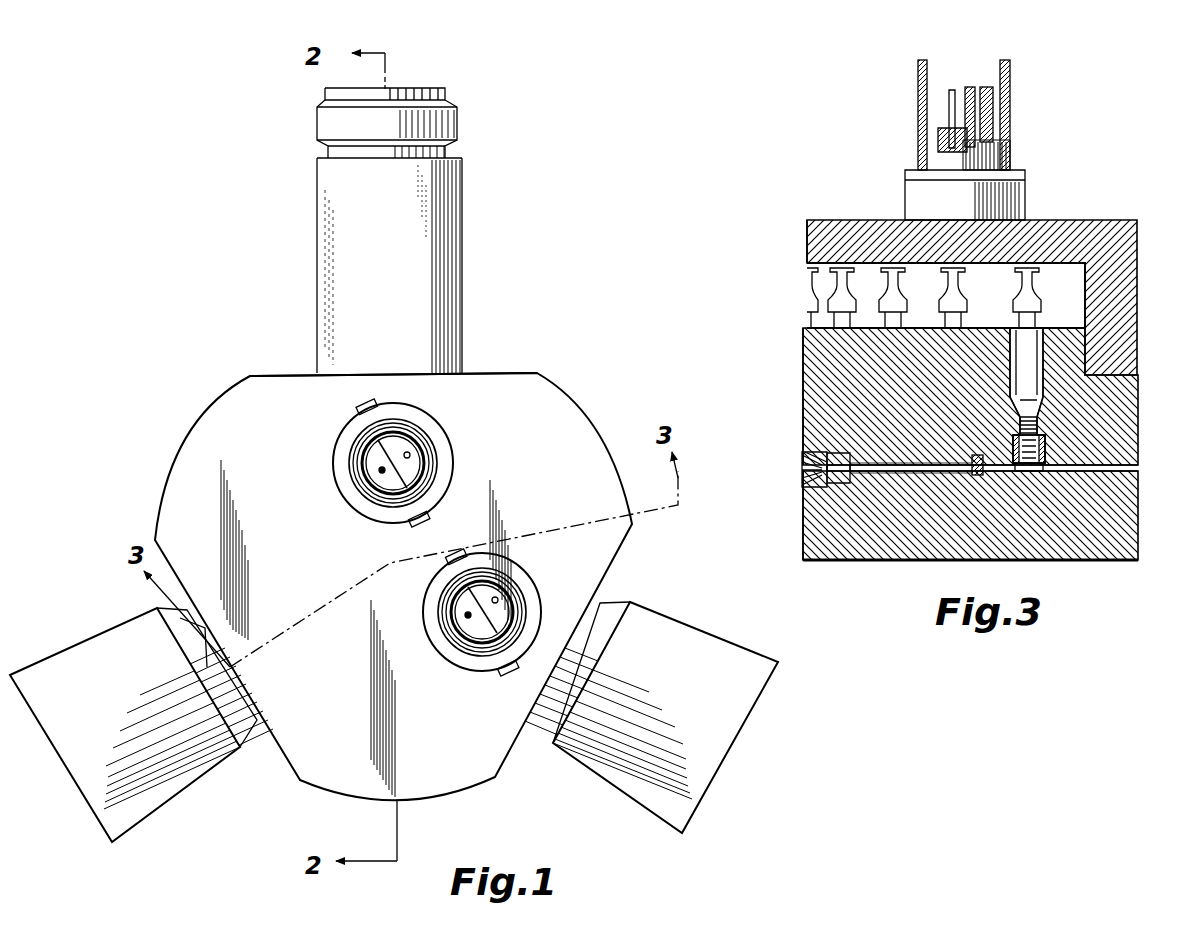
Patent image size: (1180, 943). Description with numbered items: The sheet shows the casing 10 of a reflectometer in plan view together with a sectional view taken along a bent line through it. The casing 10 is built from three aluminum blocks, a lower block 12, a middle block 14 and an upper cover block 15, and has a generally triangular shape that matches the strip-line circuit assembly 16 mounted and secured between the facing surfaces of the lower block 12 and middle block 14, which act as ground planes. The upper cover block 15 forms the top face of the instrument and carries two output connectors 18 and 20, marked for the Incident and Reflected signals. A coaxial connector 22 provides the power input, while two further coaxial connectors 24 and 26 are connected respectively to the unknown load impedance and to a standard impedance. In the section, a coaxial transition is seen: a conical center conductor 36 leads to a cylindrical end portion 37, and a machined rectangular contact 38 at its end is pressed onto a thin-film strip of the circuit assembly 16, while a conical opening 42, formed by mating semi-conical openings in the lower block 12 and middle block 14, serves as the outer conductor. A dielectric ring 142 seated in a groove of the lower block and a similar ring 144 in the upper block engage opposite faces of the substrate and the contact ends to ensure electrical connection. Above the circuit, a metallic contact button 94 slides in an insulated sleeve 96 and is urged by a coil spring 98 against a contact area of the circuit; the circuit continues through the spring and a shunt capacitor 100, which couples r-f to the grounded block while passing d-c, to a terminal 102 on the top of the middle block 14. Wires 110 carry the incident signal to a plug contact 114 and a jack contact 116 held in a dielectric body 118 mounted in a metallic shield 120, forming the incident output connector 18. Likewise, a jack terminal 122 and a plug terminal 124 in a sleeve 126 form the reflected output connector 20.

In FIG. 1, the casing 10 is at (184, 438).
In FIG. 3, the casing 10 is at (809, 219).
In FIG. 3, the lower block 12 is at (1095, 560).
In FIG. 3, the middle block 14 is at (808, 372).
In FIG. 1, the upper cover block 15 is at (266, 375).
In FIG. 3, the upper cover block 15 is at (1068, 220).
In FIG. 3, the circuit assembly 16 is at (905, 472).
In FIG. 1, the output connector 18 is at (404, 468).
In FIG. 3, the output connector 18 is at (968, 115).
In FIG. 1, the output connector 20 is at (482, 626).
In FIG. 1, the coaxial connector 22 is at (317, 258).
In FIG. 1, the coaxial connector 24 is at (180, 785).
In FIG. 1, the coaxial connector 26 is at (607, 770).
In FIG. 3, the conical center conductor 36 is at (802, 470).
In FIG. 3, the cylindrical end portion 37 is at (840, 486).
In FIG. 3, the rectangular contact 38 is at (855, 455).
In FIG. 3, the conical opening 42 is at (805, 455).
In FIG. 3, the contact button 94 is at (1031, 470).
In FIG. 3, the insulated sleeve 96 is at (1049, 446).
In FIG. 3, the coil spring 98 is at (1038, 421).
In FIG. 3, the shunt capacitor 100 is at (1013, 366).
In FIG. 3, the terminal 102 is at (1046, 310).
In FIG. 3, the wires 110 is at (966, 287).
In FIG. 1, the plug contact 114 is at (380, 470).
In FIG. 3, the plug contact 114 is at (950, 100).
In FIG. 1, the jack contact 116 is at (410, 453).
In FIG. 3, the jack contact 116 is at (992, 100).
In FIG. 1, the dielectric body 118 is at (384, 491).
In FIG. 3, the dielectric body 118 is at (938, 145).
In FIG. 1, the metallic shield 120 is at (362, 445).
In FIG. 1, the jack terminal 122 is at (499, 600).
In FIG. 1, the plug terminal 124 is at (468, 620).
In FIG. 1, the sleeve 126 is at (454, 648).
In FIG. 3, the dielectric ring 142 is at (968, 476).
In FIG. 3, the dielectric ring 144 is at (972, 458).